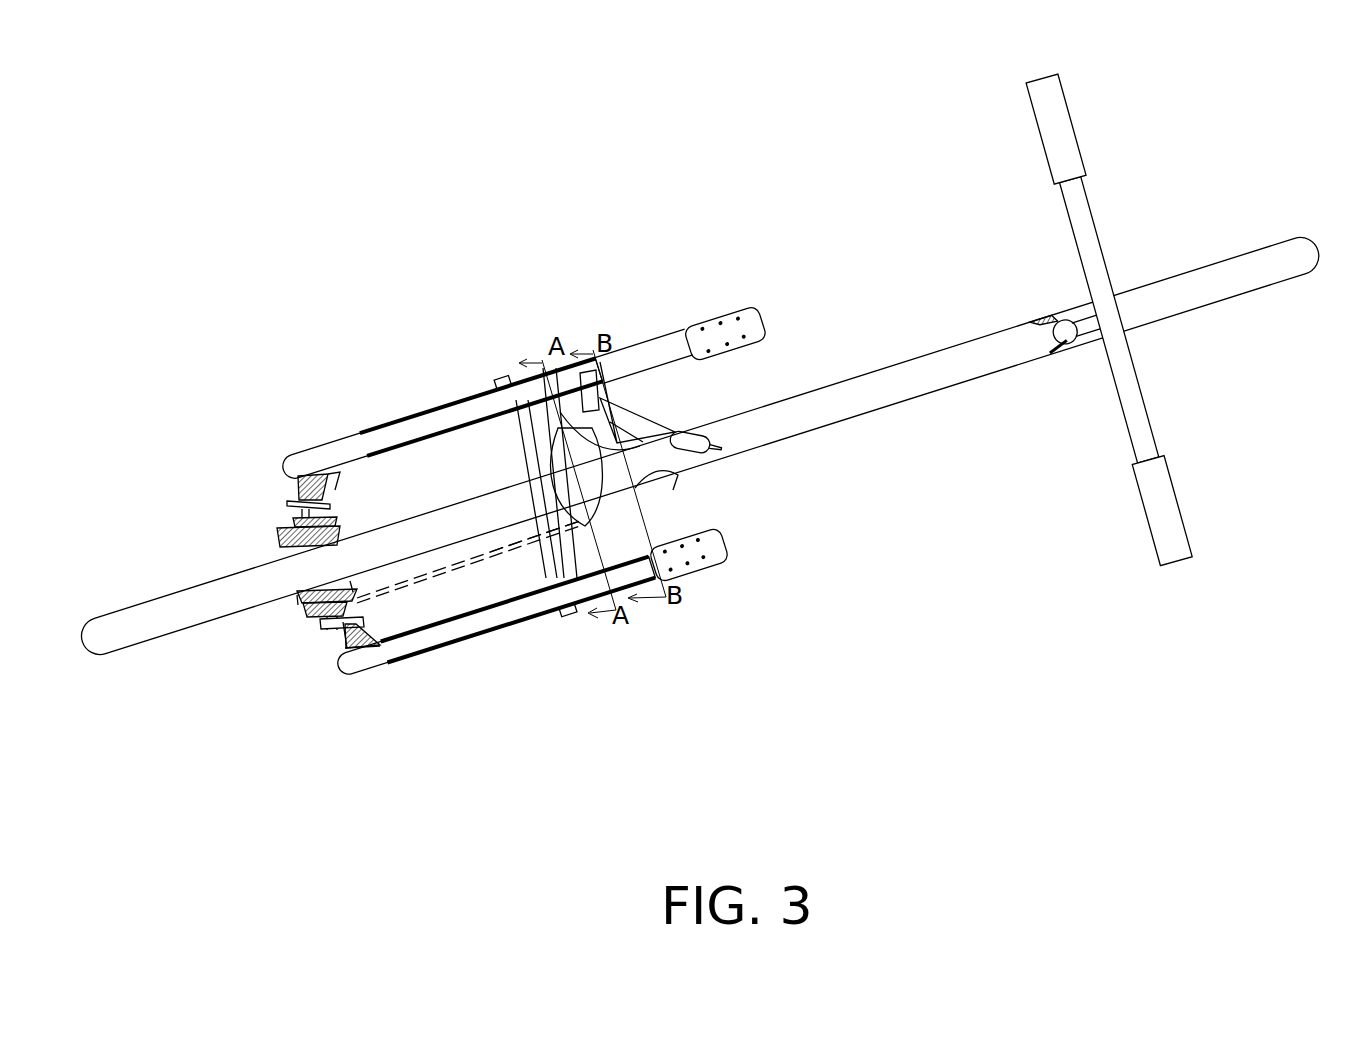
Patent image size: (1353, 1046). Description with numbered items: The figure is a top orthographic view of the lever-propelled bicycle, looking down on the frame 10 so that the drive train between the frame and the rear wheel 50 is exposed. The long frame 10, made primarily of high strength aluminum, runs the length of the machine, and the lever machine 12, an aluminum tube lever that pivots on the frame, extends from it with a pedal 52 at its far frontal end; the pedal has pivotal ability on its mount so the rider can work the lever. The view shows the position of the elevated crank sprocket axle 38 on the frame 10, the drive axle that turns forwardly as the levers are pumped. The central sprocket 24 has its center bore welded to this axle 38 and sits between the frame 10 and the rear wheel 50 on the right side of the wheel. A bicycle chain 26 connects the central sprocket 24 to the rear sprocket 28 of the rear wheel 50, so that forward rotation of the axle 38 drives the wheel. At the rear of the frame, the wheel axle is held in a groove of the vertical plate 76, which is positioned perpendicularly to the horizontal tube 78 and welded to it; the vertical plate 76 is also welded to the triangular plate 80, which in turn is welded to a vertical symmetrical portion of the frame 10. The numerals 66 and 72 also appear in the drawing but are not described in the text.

The frame 10 is at (900, 383).
The lever machine 12 is at (644, 356).
The central sprocket 24 is at (538, 544).
The chain 26 is at (490, 564).
The rear sprocket 28 is at (300, 604).
The crank sprocket axle 38 is at (525, 462).
The rear wheel 50 is at (282, 579).
The pedal 52 is at (708, 443).
The clamp nut 66 is at (277, 541).
The stop block 72 is at (440, 415).
The vertical plate 76 is at (320, 631).
The horizontal tube 78 is at (287, 501).
The triangular plate 80 is at (330, 473).